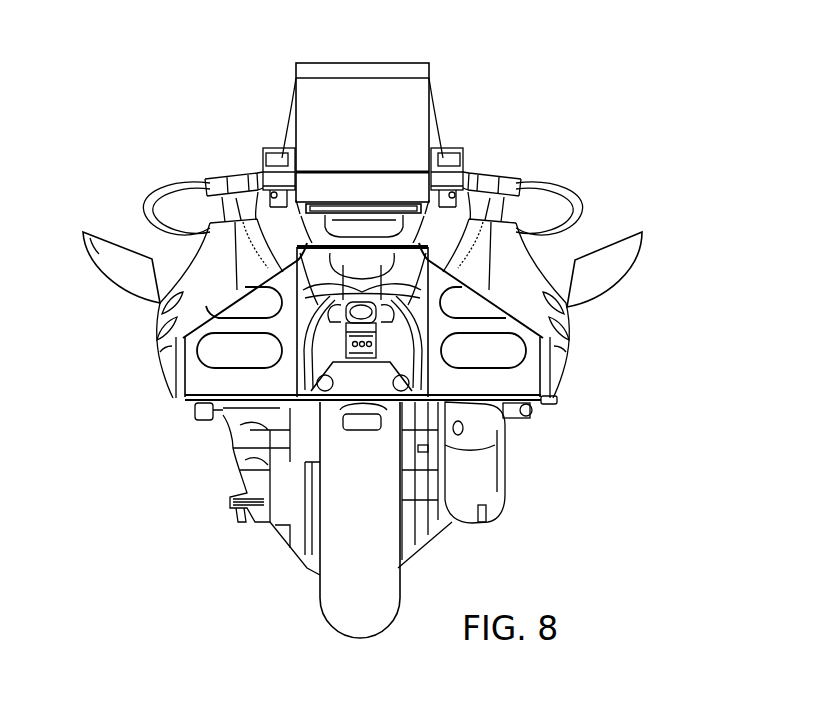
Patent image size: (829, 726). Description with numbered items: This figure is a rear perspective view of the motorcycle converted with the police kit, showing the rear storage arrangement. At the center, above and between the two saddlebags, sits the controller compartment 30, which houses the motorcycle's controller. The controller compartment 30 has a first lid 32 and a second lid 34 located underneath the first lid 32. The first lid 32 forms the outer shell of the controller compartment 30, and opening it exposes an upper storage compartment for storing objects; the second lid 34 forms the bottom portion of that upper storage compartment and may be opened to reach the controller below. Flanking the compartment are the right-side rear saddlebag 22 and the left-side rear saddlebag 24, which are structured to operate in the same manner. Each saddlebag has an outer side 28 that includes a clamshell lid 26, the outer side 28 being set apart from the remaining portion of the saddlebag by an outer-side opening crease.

The right-side rear saddlebag 22 is at (475, 247).
The left-side rear saddlebag 24 is at (253, 247).
The clamshell lid 26 is at (103, 252).
The outer side 28 is at (163, 297).
The controller compartment 30 is at (410, 188).
The first lid 32 is at (303, 67).
The second lid 34 is at (383, 103).